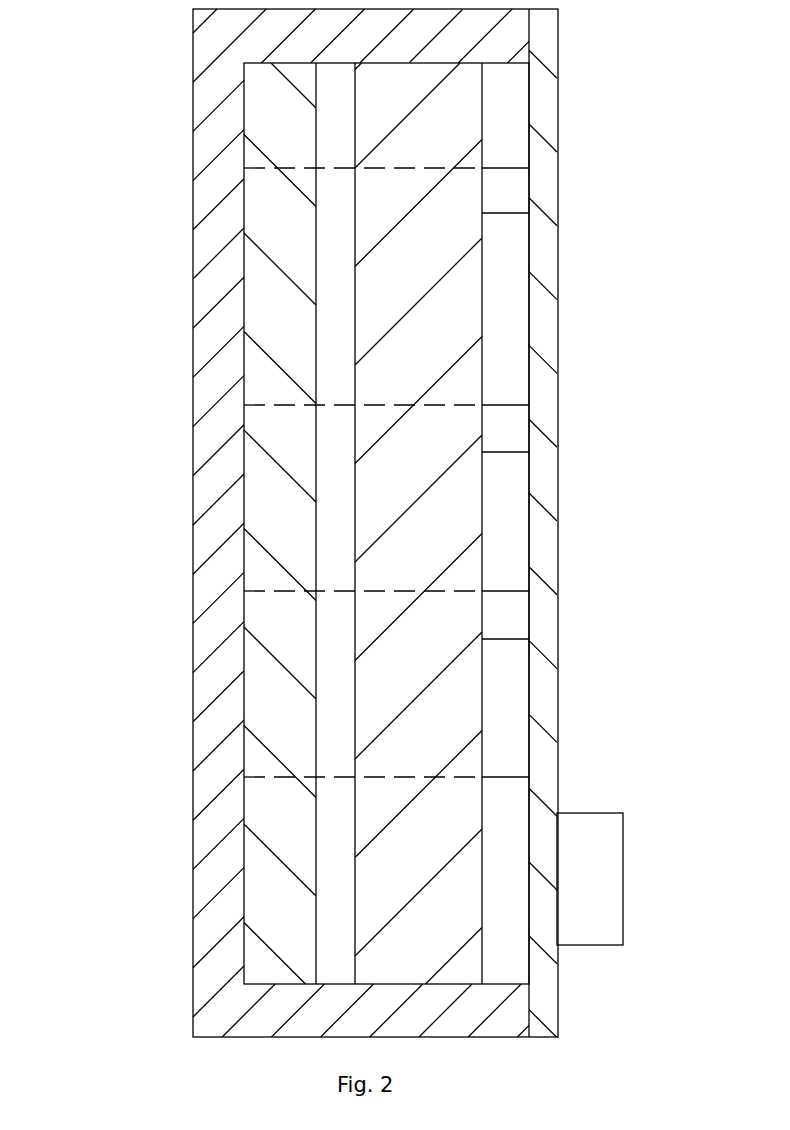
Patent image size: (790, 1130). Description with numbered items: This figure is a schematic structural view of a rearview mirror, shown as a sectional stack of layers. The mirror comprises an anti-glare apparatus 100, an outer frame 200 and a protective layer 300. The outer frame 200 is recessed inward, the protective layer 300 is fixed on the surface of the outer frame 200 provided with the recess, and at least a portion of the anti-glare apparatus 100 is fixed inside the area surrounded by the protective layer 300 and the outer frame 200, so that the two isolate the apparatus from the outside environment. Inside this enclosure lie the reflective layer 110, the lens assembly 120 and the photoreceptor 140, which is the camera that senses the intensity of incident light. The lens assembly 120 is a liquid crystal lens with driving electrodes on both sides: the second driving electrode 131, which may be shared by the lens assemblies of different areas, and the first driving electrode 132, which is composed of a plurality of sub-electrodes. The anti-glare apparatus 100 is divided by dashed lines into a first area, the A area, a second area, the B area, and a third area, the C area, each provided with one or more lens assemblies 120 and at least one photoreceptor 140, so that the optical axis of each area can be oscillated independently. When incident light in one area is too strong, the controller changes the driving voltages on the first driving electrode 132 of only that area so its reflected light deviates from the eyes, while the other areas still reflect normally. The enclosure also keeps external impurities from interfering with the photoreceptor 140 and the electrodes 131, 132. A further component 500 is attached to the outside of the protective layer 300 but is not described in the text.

The anti-glare apparatus 100 is at (290, 704).
The reflective layer 110 is at (292, 527).
The lens assembly 120 is at (423, 634).
The second driving electrode 131 is at (342, 377).
The first driving electrode 132 is at (512, 341).
The photoreceptor 140 is at (517, 198).
The outer frame 200 is at (213, 197).
The protective layer 300 is at (538, 263).
The connector 500 is at (573, 838).
The A area A is at (260, 272).
The B area B is at (260, 563).
The C area C is at (263, 677).